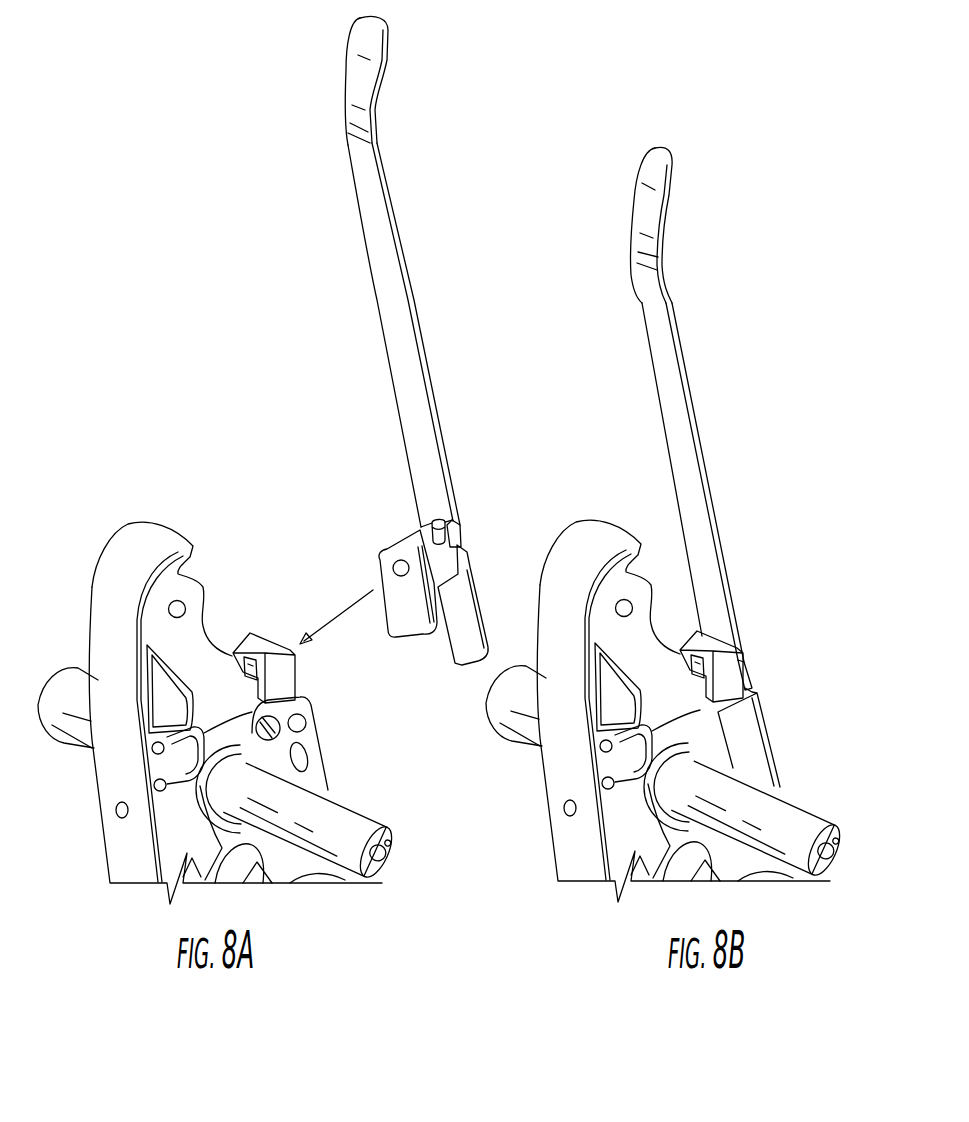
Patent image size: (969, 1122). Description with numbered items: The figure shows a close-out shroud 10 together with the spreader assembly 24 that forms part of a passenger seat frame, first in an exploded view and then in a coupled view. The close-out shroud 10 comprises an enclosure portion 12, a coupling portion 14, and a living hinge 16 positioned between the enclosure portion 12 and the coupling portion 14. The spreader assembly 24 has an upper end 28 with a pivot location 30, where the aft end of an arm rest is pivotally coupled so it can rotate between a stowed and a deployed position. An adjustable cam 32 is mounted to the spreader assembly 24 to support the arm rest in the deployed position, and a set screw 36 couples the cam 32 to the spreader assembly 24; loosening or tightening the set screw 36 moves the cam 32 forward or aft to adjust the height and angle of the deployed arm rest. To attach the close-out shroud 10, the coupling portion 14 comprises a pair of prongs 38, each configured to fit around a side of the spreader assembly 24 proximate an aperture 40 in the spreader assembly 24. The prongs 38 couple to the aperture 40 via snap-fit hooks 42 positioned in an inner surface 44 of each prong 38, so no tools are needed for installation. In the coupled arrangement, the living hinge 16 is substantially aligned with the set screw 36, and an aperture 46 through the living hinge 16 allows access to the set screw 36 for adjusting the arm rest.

In FIG. 8A, the close-out shroud 10 is at (372, 36).
In FIG. 8B, the close-out shroud 10 is at (650, 167).
In FIG. 8A, the enclosure portion 12 is at (385, 251).
In FIG. 8B, the enclosure portion 12 is at (655, 315).
In FIG. 8A, the coupling portion 14 is at (468, 593).
In FIG. 8B, the coupling portion 14 is at (760, 768).
In FIG. 8A, the living hinge 16 is at (460, 526).
In FIG. 8B, the living hinge 16 is at (752, 674).
In FIG. 8A, the spreader assembly 24 is at (117, 835).
In FIG. 8B, the spreader assembly 24 is at (562, 840).
In FIG. 8A, the upper end 28 is at (163, 588).
In FIG. 8B, the upper end 28 is at (613, 588).
In FIG. 8A, the pivot location 30 is at (167, 610).
In FIG. 8B, the pivot location 30 is at (613, 610).
In FIG. 8A, the adjustable cam 32 is at (268, 650).
In FIG. 8B, the adjustable cam 32 is at (718, 652).
In FIG. 8A, the set screw 36 is at (250, 662).
In FIG. 8B, the set screw 36 is at (700, 640).
In FIG. 8A, the prong 38 is at (378, 583).
In FIG. 8B, the prong 38 is at (750, 727).
In FIG. 8A, the aperture 40 is at (306, 724).
In FIG. 8A, the snap-fit hook 42 is at (398, 563).
In FIG. 8A, the inner surface 44 is at (404, 617).
In FIG. 8A, the aperture 46 is at (440, 517).